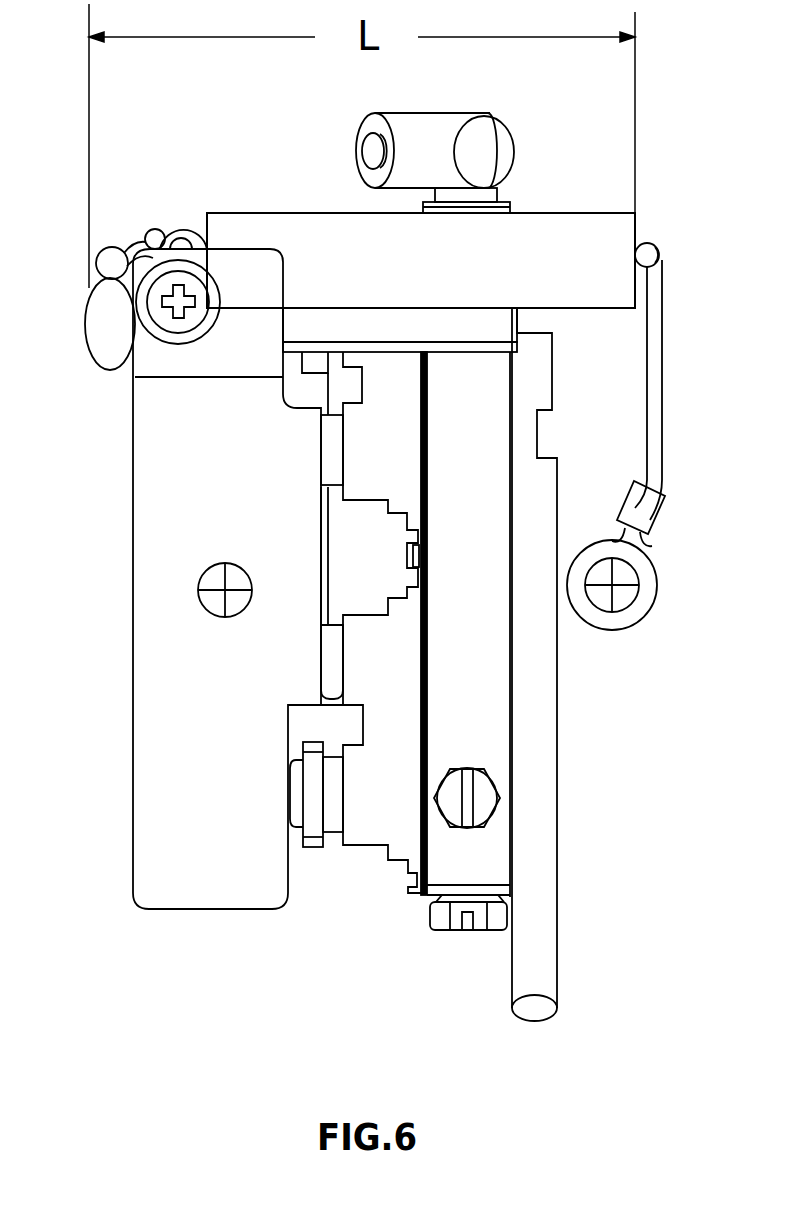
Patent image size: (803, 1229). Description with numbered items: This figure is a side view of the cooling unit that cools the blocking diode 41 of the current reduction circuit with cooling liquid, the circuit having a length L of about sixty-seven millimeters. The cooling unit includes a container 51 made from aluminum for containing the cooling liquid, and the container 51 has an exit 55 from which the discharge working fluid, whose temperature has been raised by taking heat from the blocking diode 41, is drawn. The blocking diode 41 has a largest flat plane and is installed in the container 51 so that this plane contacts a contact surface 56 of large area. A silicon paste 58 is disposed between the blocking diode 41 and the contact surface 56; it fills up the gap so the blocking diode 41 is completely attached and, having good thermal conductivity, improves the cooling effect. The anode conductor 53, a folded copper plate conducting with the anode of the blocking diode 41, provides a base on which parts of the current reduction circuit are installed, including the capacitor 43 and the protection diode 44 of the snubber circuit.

The blocking diode 41 is at (413, 447).
The capacitor 43 is at (95, 345).
The protection diode 44 is at (178, 222).
The container 51 is at (498, 498).
The anode conductor 53 is at (140, 590).
The exit 55 is at (447, 112).
The contact surface 56 is at (422, 662).
The silicon paste 58 is at (425, 612).